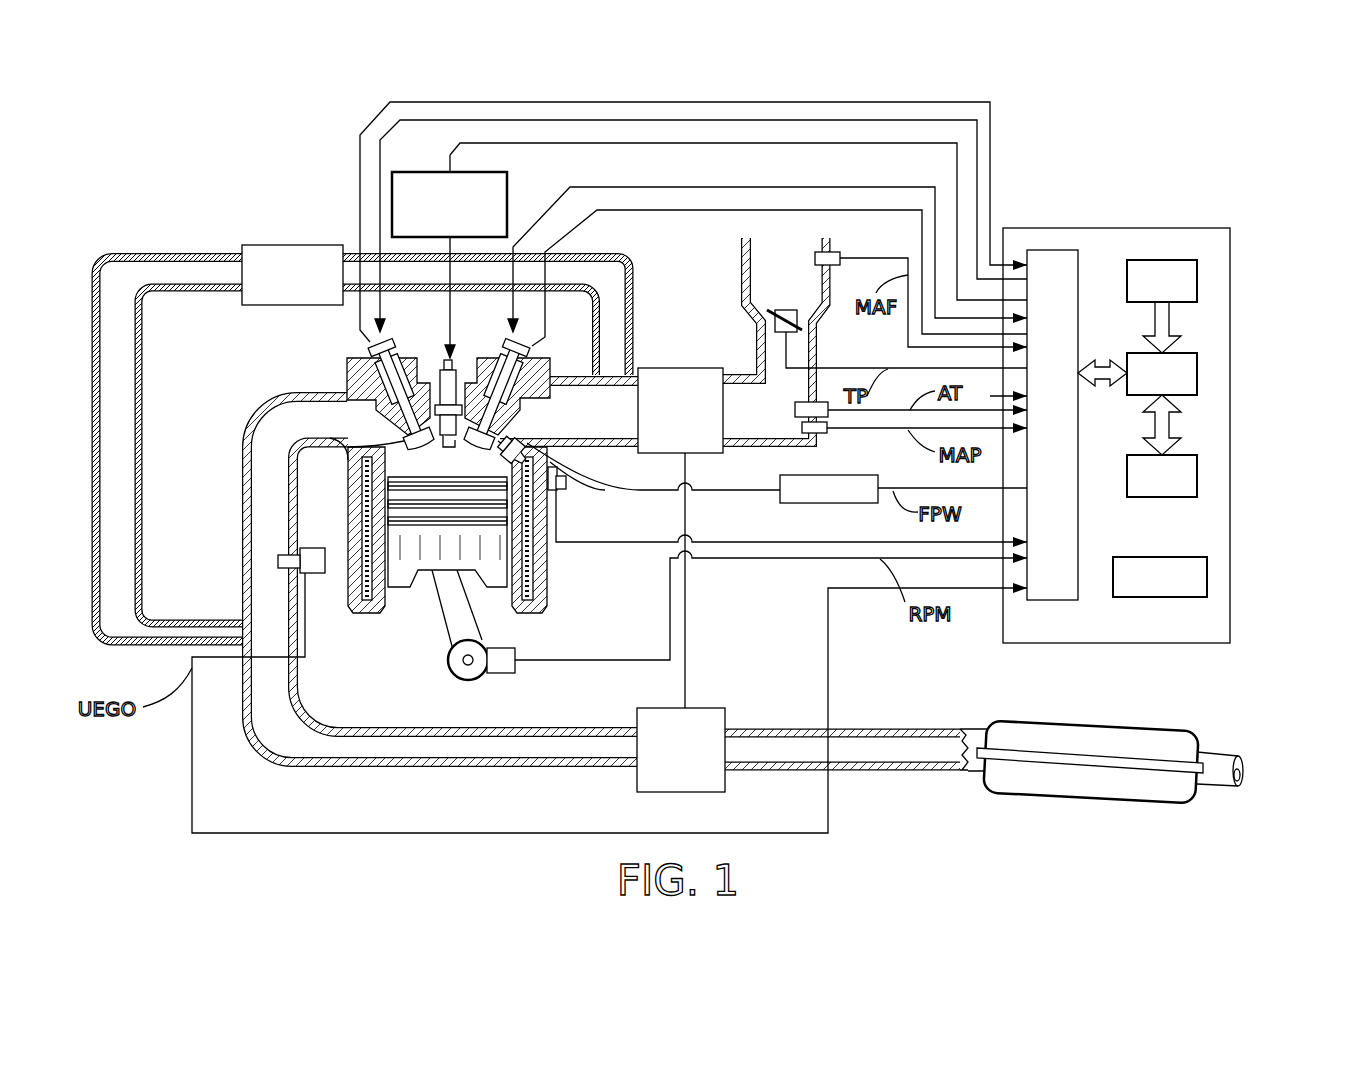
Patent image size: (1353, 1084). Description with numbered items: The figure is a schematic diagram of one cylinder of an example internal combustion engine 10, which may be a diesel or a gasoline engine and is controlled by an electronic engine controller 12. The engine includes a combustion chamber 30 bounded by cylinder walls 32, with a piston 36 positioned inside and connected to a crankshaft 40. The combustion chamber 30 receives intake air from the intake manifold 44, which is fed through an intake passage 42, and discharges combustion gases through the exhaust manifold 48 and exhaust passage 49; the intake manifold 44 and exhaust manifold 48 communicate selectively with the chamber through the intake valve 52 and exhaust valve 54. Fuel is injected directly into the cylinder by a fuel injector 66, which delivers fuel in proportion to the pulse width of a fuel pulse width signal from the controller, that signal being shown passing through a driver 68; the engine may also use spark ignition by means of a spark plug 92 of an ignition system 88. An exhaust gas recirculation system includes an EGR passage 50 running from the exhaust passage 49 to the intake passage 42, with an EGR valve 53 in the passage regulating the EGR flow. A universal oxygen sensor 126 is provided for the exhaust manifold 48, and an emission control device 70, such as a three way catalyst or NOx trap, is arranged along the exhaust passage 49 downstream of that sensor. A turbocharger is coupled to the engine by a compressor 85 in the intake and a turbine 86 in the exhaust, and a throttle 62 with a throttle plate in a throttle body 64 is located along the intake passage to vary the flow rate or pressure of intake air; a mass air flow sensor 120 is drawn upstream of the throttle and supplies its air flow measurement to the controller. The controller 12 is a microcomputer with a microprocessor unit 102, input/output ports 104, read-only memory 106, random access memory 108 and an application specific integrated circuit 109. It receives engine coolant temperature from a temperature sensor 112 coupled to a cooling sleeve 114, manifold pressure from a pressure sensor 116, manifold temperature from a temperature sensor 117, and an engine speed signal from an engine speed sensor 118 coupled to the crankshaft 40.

The internal combustion engine 10 is at (258, 163).
The electronic engine controller 12 is at (1167, 423).
The combustion chamber 30 is at (430, 500).
The cylinder walls 32 is at (487, 559).
The piston 36 is at (430, 560).
The crankshaft 40 is at (452, 666).
The intake passage 42 is at (800, 288).
The intake manifold 44 is at (593, 422).
The exhaust manifold 48 is at (290, 434).
The exhaust passage 49 is at (259, 726).
The EGR passage 50 is at (146, 256).
The intake valve 52 is at (492, 426).
The EGR valve 53 is at (292, 246).
The exhaust valve 54 is at (404, 433).
The throttle 62 is at (796, 317).
The throttle body 64 is at (770, 314).
The fuel injector 66 is at (579, 489).
The driver 68 is at (781, 504).
The emission control device 70 is at (1170, 731).
The compressor 85 is at (668, 422).
The turbine 86 is at (669, 764).
The ignition system 88 is at (405, 172).
The spark plug 92 is at (451, 371).
The microprocessor unit 102 is at (1198, 369).
The input/output ports 104 is at (1080, 259).
The read-only memory 106 is at (1198, 278).
The random access memory 108 is at (1198, 473).
The application specific integrated circuit 109 is at (1208, 571).
The temperature sensor 112 is at (568, 493).
The cooling sleeve 114 is at (530, 558).
The pressure sensor 116 is at (823, 434).
The temperature sensor 117 is at (834, 417).
The engine speed sensor 118 is at (505, 674).
The mass air flow sensor 120 is at (838, 253).
The universal oxygen sensor (UEGO) 126 is at (303, 548).